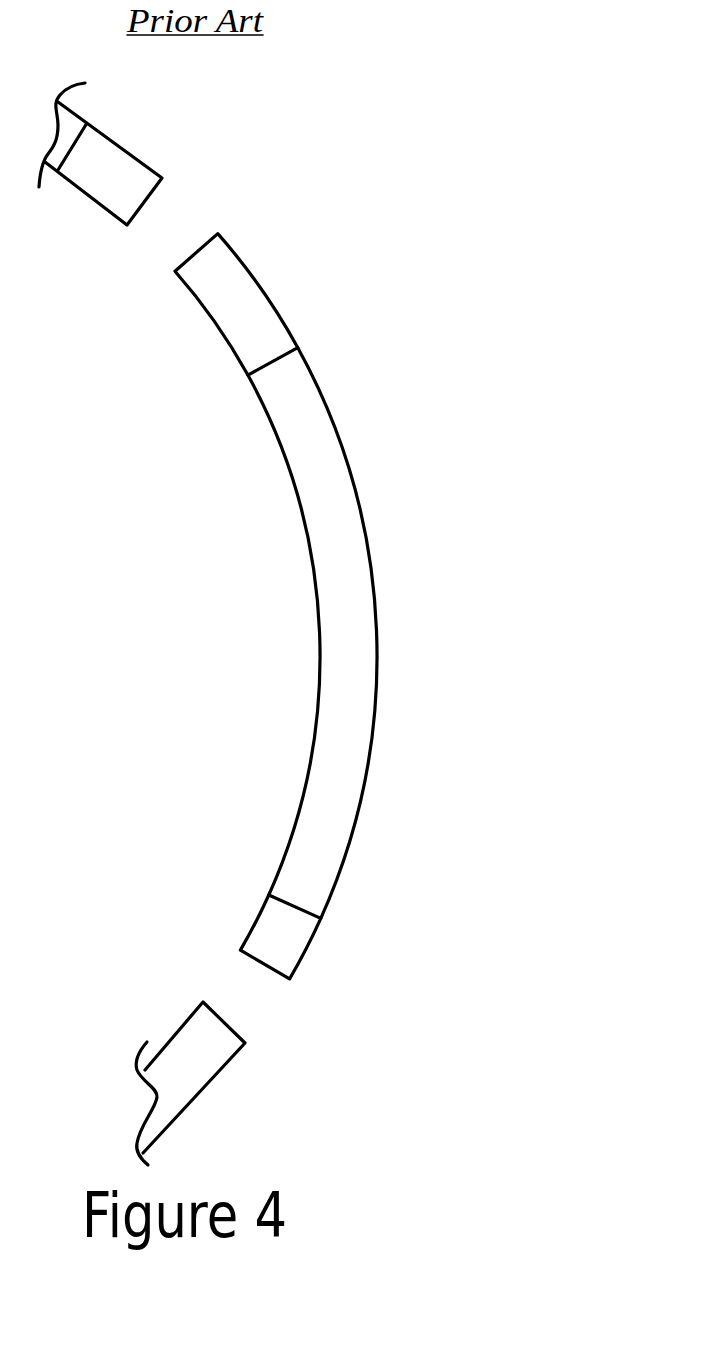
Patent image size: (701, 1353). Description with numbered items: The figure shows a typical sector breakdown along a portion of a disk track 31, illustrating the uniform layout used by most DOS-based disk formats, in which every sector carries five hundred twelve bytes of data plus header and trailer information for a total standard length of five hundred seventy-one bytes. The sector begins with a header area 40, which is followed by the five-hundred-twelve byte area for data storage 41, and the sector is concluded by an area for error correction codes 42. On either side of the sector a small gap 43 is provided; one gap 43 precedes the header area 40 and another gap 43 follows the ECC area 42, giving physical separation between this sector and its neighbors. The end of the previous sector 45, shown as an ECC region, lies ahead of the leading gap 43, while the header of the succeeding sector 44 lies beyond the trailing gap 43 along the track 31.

The track 31 is at (418, 162).
The header area 40 is at (260, 280).
The 512 byte area for data storage 41 is at (380, 617).
The area for Error Correction Codes (ECC) 42 is at (310, 953).
The gap 43 is at (192, 217).
The succeeding sector 44 is at (208, 1097).
The previous sector 45 is at (82, 113).